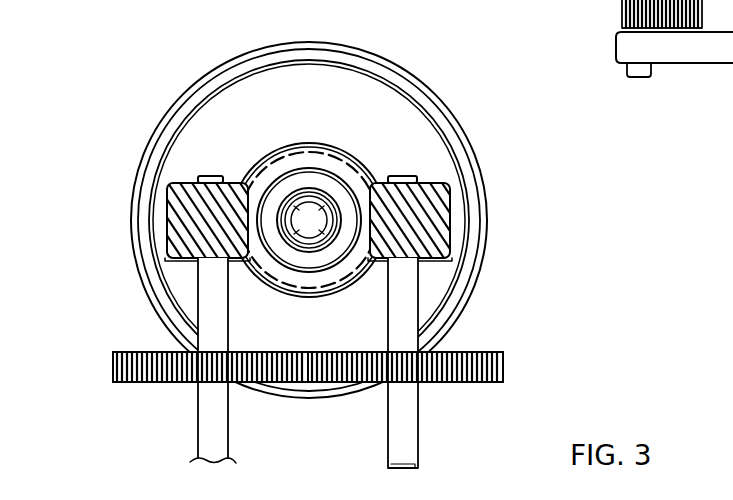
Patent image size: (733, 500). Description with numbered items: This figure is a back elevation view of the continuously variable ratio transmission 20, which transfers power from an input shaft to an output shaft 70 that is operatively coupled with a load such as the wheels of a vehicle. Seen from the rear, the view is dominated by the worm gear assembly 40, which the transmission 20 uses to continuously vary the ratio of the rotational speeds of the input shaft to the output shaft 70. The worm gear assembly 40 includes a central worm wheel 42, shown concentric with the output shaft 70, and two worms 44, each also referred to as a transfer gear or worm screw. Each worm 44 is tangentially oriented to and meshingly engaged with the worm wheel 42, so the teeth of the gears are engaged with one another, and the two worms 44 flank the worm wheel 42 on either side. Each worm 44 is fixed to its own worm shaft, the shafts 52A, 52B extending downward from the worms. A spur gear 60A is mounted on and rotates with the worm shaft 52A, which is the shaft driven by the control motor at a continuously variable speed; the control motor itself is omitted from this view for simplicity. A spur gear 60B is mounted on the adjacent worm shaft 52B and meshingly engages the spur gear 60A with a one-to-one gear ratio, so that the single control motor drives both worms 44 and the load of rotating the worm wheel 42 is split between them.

The continuously variable ratio transmission 20 is at (148, 53).
The worm gear assembly 40 is at (490, 122).
The worm wheel 42 is at (324, 148).
The worm 44 is at (167, 202).
The worm shaft 52A is at (203, 413).
The worm shaft 52B is at (413, 420).
The spur gear 60A is at (128, 353).
The spur gear 60B is at (483, 352).
The output shaft 70 is at (300, 229).